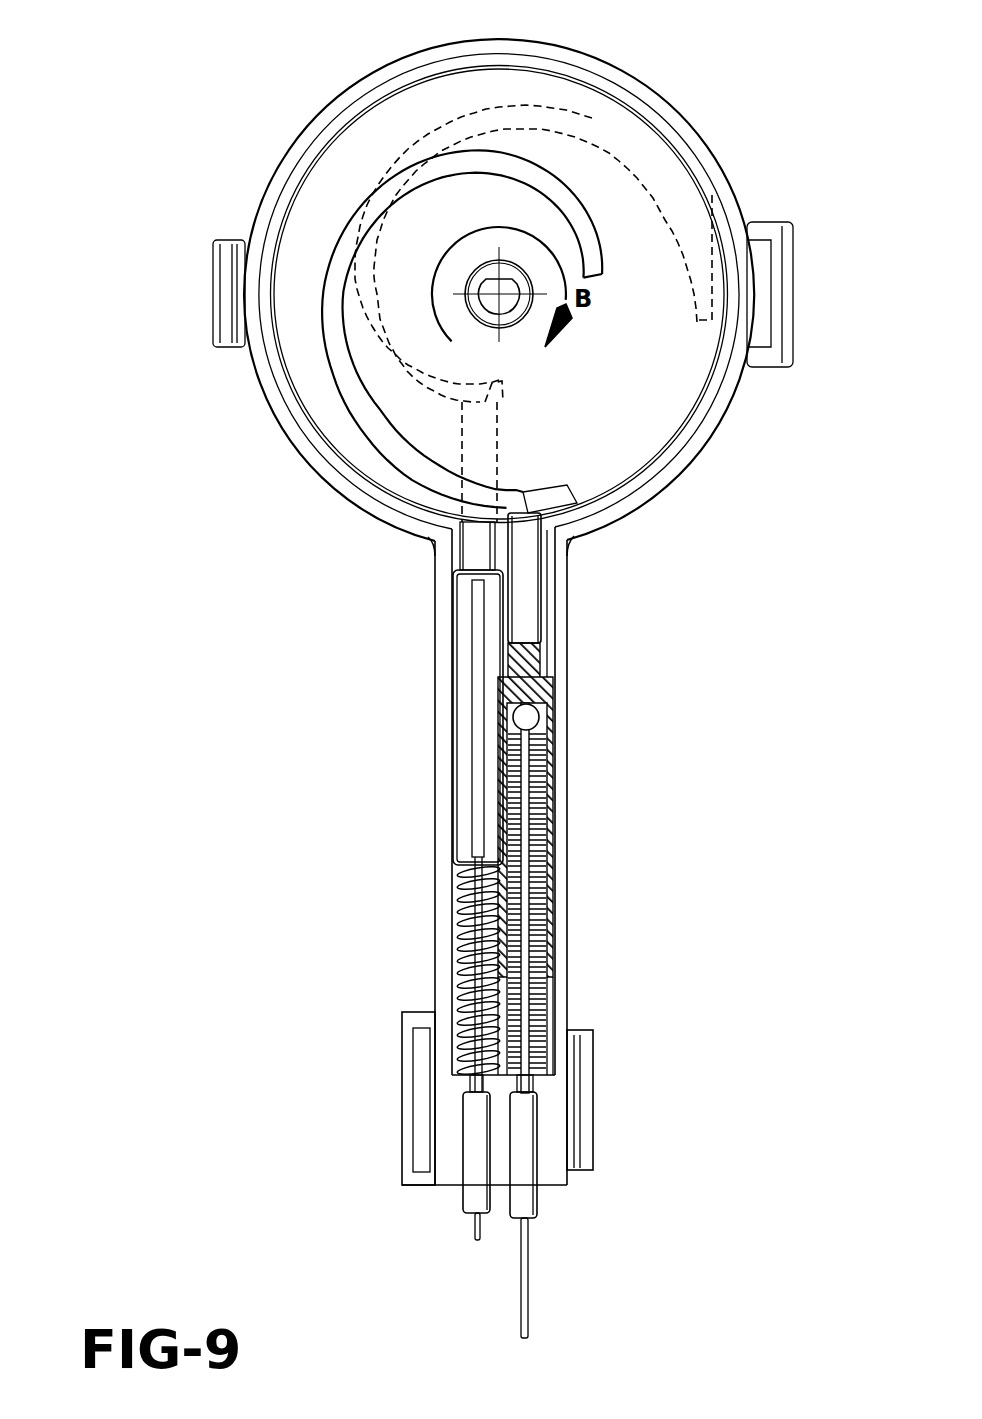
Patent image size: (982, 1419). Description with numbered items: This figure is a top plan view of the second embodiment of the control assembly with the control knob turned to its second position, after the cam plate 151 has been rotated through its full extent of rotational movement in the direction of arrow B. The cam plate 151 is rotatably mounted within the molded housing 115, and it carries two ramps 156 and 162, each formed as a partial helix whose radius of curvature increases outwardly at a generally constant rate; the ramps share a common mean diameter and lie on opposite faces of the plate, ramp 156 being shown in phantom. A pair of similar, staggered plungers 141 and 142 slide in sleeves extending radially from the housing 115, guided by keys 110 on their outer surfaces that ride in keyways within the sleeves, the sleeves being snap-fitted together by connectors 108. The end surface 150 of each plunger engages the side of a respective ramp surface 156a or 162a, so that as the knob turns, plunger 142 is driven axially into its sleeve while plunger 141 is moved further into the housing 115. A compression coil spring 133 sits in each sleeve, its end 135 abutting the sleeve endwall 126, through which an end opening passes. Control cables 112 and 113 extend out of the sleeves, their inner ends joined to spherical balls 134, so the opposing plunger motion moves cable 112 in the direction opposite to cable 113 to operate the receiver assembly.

The connectors 108 is at (596, 1097).
The keys 110 is at (476, 829).
The control cable 112 is at (476, 1228).
The control cable 113 is at (528, 1280).
The housing 115 is at (673, 483).
The endwall 126 is at (553, 1186).
The compression coil spring 133 is at (548, 930).
The balls 134 is at (530, 716).
The end of spring 135 is at (537, 1073).
The plunger 141 is at (464, 752).
The plunger 142 is at (553, 765).
The end surface 150 is at (500, 381).
The cam plate 151 is at (370, 133).
The ramp 156 is at (452, 122).
The ramp surface 156a is at (593, 118).
The ramp 162 is at (356, 427).
The ramp surface 162a is at (387, 463).